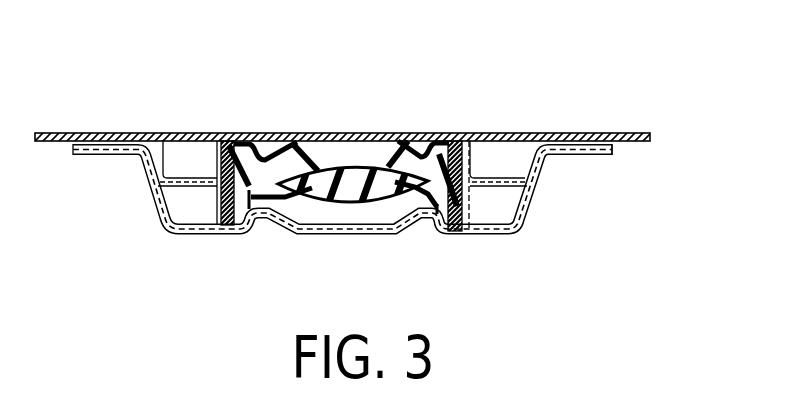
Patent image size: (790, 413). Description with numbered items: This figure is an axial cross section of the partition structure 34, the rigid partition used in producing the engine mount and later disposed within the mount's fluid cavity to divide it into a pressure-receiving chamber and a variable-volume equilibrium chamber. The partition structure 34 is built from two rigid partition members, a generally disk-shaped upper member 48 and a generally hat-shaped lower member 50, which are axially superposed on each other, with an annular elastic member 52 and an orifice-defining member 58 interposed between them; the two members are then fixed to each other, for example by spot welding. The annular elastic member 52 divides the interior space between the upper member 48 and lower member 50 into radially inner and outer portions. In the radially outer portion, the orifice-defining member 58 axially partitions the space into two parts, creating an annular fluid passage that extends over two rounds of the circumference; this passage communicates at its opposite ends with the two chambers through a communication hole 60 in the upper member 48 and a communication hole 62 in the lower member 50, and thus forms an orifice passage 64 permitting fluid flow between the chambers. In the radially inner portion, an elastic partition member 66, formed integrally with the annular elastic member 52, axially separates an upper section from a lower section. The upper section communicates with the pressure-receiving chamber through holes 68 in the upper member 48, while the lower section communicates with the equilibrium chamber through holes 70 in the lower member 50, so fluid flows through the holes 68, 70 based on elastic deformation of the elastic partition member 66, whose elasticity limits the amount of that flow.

The partition structure 34 is at (519, 93).
The upper member 48 is at (523, 133).
The lower member 50 is at (487, 236).
The annular elastic member 52 is at (446, 222).
The orifice-defining member 58 is at (163, 218).
The communication hole 60 is at (177, 133).
The communication hole 62 is at (211, 232).
The orifice passage 64 is at (503, 205).
The elastic partition member 66 is at (350, 178).
The holes 68 is at (308, 133).
The holes 70 is at (307, 236).